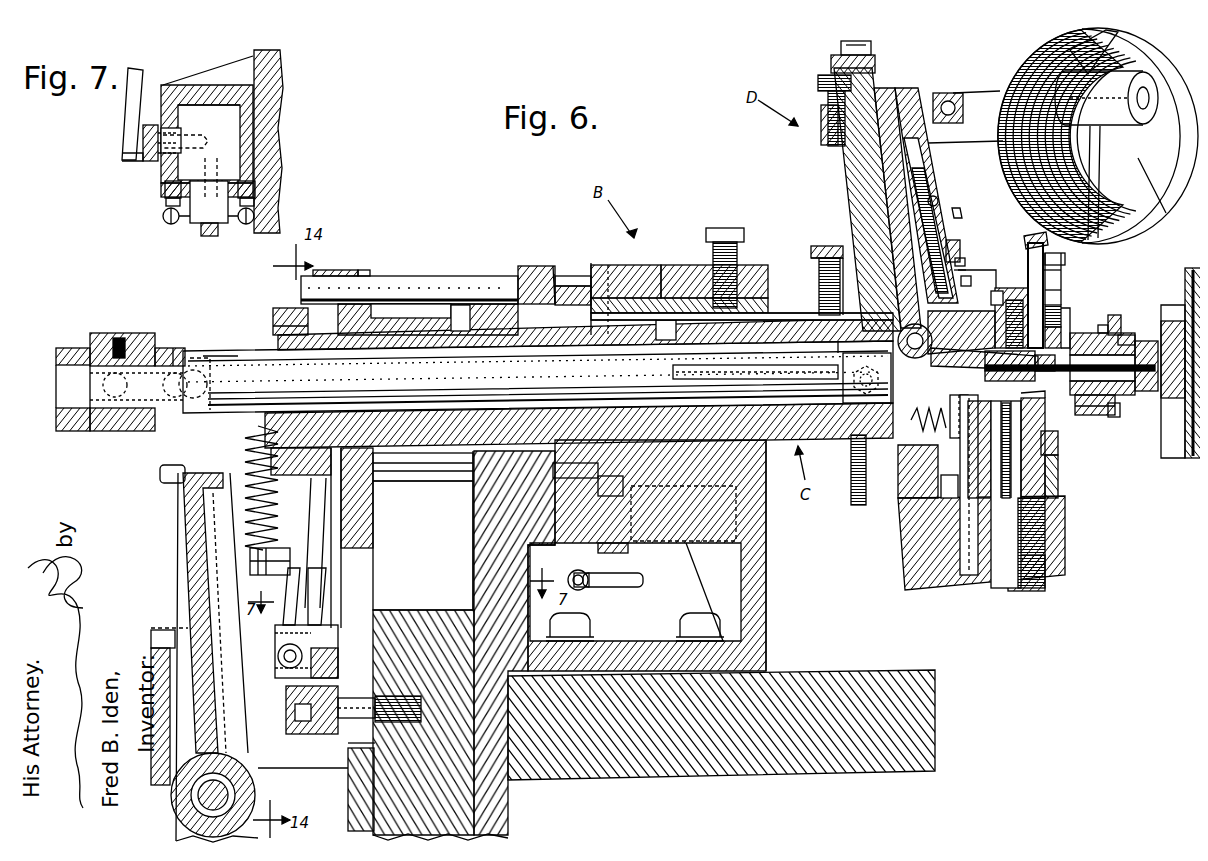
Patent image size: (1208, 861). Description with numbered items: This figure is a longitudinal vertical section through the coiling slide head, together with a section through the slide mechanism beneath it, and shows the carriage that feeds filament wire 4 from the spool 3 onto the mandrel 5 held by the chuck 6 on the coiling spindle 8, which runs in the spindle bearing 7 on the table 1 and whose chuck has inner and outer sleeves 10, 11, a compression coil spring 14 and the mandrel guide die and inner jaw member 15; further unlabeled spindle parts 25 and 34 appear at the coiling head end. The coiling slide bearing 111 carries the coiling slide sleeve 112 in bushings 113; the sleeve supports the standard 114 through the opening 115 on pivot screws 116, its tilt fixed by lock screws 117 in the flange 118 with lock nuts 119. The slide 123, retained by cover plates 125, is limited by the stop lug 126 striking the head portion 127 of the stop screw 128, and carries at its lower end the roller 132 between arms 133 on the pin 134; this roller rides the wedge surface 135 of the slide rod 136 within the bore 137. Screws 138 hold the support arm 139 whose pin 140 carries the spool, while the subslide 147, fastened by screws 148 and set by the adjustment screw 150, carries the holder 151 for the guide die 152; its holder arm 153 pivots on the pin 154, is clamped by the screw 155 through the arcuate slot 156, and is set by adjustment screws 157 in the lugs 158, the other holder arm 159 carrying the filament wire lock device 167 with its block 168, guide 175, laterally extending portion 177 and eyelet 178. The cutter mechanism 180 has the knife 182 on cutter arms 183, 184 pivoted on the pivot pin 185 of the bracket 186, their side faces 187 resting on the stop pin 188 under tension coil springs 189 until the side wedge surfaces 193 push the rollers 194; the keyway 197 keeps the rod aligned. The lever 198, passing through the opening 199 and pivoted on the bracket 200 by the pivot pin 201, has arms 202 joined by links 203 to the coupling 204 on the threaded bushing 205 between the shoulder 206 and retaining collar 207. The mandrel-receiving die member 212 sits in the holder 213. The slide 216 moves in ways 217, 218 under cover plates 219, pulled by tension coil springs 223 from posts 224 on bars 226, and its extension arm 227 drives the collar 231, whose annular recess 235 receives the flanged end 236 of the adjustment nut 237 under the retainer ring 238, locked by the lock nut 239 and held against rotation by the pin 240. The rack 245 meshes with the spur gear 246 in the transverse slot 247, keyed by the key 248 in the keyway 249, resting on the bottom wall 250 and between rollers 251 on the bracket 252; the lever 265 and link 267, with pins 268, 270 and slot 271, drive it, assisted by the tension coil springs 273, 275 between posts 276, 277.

In FIG. 6, the table 1 is at (835, 667).
In FIG. 6, the spool 3 is at (1162, 200).
In FIG. 6, the filament wire 4 is at (1055, 258).
In FIG. 6, the mandrel 5 is at (1052, 364).
In FIG. 6, the chuck 6 is at (1097, 325).
In FIG. 6, the spindle bearing 7 is at (1183, 430).
In FIG. 6, the coiling spindle 8 is at (1140, 383).
In FIG. 6, the inner sleeve 10 is at (1082, 325).
In FIG. 6, the outer sleeve 11 is at (1106, 398).
In FIG. 6, the compression coil spring 14 is at (1090, 400).
In FIG. 6, the mandrel guide die and inner jaw member 15 is at (1080, 388).
In FIG. 6, the key 25 is at (1124, 328).
In FIG. 6, the stop 34 is at (1110, 307).
In FIG. 7, the coiling slide bearing 111 is at (238, 54).
In FIG. 6, the coiling slide bearing 111 is at (682, 256).
In FIG. 6, the coiling slide sleeve 112 is at (775, 432).
In FIG. 6, the bushings 113 is at (524, 268).
In FIG. 6, the support standard 114 is at (834, 181).
In FIG. 6, the opening 115 is at (830, 295).
In FIG. 6, the pivot screws 116 is at (862, 370).
In FIG. 6, the lock screws 117 is at (803, 242).
In FIG. 6, the flange 118 is at (809, 266).
In FIG. 6, the lock nuts 119 is at (805, 250).
In FIG. 6, the slide 123 is at (866, 198).
In FIG. 6, the cover plates 125 is at (905, 168).
In FIG. 6, the stop lug 126 is at (833, 38).
In FIG. 6, the head portion 127 is at (812, 68).
In FIG. 6, the stop screw 128 is at (810, 83).
In FIG. 6, the roller 132 is at (930, 360).
In FIG. 6, the arms 133 is at (898, 318).
In FIG. 6, the pin 134 is at (860, 360).
In FIG. 6, the wedge surface 135 is at (822, 345).
In FIG. 6, the slide rod 136 is at (222, 344).
In FIG. 6, the bore 137 is at (236, 348).
In FIG. 6, the screws 138 is at (945, 90).
In FIG. 6, the support arm 139 is at (963, 85).
In FIG. 6, the pin 140 is at (1137, 92).
In FIG. 6, the subslide 147 is at (953, 262).
In FIG. 6, the screws 148 is at (952, 250).
In FIG. 6, the adjustment screw 150 is at (925, 178).
In FIG. 6, the holder 151 is at (997, 282).
In FIG. 6, the guide die 152 is at (1055, 310).
In FIG. 6, the holder arm 153 is at (945, 236).
In FIG. 6, the pin 154 is at (983, 285).
In FIG. 6, the screw 155 is at (948, 273).
In FIG. 6, the arcuate slot 156 is at (960, 272).
In FIG. 6, the adjustment screws 157 is at (930, 192).
In FIG. 6, the lugs 158 is at (948, 204).
In FIG. 6, the holder arm 159 is at (968, 304).
In FIG. 6, the filament wire lock device 167 is at (1074, 276).
In FIG. 6, the block 168 is at (1037, 272).
In FIG. 6, the guide 175 is at (1020, 240).
In FIG. 6, the laterally extending portion 177 is at (1035, 250).
In FIG. 6, the eyelet 178 is at (1022, 229).
In FIG. 6, the cutter mechanism 180 is at (1060, 457).
In FIG. 6, the knife 182 is at (1053, 322).
In FIG. 6, the cutter arm 183 is at (1035, 422).
In FIG. 6, the cutter arm 184 is at (1050, 447).
In FIG. 6, the pivot pin 185 is at (1030, 470).
In FIG. 6, the bracket 186 is at (1057, 526).
In FIG. 6, the side faces 187 is at (952, 452).
In FIG. 6, the stop pin 188 is at (940, 466).
In FIG. 6, the tension coil springs 189 is at (942, 430).
In FIG. 6, the side wedge surfaces 193 is at (852, 430).
In FIG. 6, the rollers 194 is at (928, 397).
In FIG. 6, the keyway 197 is at (752, 365).
In FIG. 6, the lever 198 is at (180, 547).
In FIG. 6, the opening 199 is at (303, 755).
In FIG. 6, the bracket 200 is at (158, 618).
In FIG. 6, the pivot pin 201 is at (225, 768).
In FIG. 6, the arms 202 is at (150, 462).
In FIG. 6, the links 203 is at (185, 392).
In FIG. 6, the coupling 204 is at (128, 328).
In FIG. 6, the threaded bushing 205 is at (158, 340).
In FIG. 6, the shoulder 206 is at (182, 345).
In FIG. 6, the retaining collar 207 is at (62, 345).
In FIG. 6, the mandrel-receiving die member 212 is at (1035, 364).
In FIG. 6, the holder 213 is at (982, 370).
In FIG. 7, the slide 216 is at (178, 163).
In FIG. 6, the slide 216 is at (416, 604).
In FIG. 7, the way 217 is at (172, 101).
In FIG. 6, the way 217 is at (365, 520).
In FIG. 7, the way 218 is at (200, 136).
In FIG. 6, the way 218 is at (462, 527).
In FIG. 7, the cover plates 219 is at (160, 179).
In FIG. 7, the tension coil springs 223 is at (163, 215).
In FIG. 7, the posts 224 is at (180, 217).
In FIG. 7, the bars 226 is at (160, 197).
In FIG. 7, the extension arm 227 is at (205, 168).
In FIG. 6, the collar 231 is at (358, 263).
In FIG. 6, the annular recess 235 is at (348, 297).
In FIG. 6, the flanged end 236 is at (318, 318).
In FIG. 6, the adjustment nut 237 is at (296, 468).
In FIG. 6, the retainer ring 238 is at (322, 265).
In FIG. 6, the lock nut 239 is at (278, 318).
In FIG. 6, the pin 240 is at (428, 268).
In FIG. 6, the rack 245 is at (560, 556).
In FIG. 6, the spur gear 246 is at (566, 278).
In FIG. 6, the transverse slot 247 is at (545, 268).
In FIG. 6, the key 248 is at (578, 278).
In FIG. 6, the keyway 249 is at (618, 300).
In FIG. 6, the bottom wall 250 is at (596, 536).
In FIG. 6, the rollers 251 is at (612, 560).
In FIG. 6, the bracket 252 is at (690, 552).
In FIG. 7, the lever 265 is at (118, 104).
In FIG. 6, the lever 265 is at (280, 608).
In FIG. 7, the link 267 is at (135, 153).
In FIG. 6, the link 267 is at (305, 650).
In FIG. 6, the pin 268 is at (280, 535).
In FIG. 7, the pin 270 is at (143, 117).
In FIG. 6, the pin 270 is at (343, 690).
In FIG. 6, the slot 271 is at (340, 735).
In FIG. 6, the tension coil spring 273 is at (236, 440).
In FIG. 6, the tension coil spring 275 is at (576, 582).
In FIG. 6, the post 276 is at (566, 568).
In FIG. 6, the post 277 is at (617, 587).